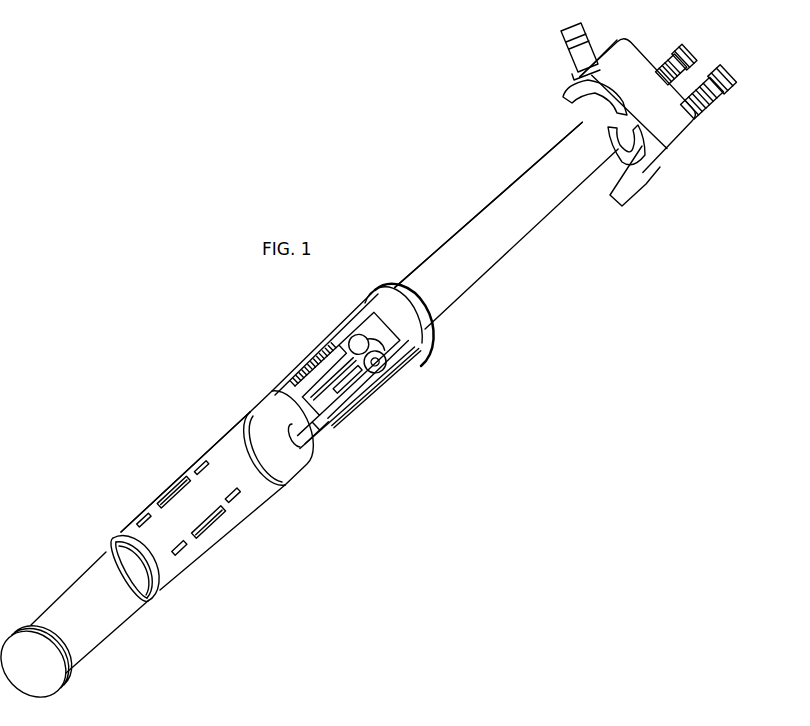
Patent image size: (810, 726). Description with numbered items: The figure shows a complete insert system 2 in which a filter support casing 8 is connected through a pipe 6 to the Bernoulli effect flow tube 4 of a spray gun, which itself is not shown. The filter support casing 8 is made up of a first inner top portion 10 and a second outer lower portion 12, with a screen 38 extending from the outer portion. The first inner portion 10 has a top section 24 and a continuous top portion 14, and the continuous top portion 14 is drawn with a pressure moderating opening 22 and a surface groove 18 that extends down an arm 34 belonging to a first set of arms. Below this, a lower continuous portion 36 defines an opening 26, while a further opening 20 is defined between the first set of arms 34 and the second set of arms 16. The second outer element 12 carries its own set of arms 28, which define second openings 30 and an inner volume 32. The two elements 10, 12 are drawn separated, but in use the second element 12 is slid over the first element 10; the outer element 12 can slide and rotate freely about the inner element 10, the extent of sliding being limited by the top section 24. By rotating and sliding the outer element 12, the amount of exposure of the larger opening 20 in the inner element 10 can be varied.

The insert system 2 is at (468, 312).
The Bernoulli effect flow tube 4 is at (692, 142).
The pipe 6 is at (553, 212).
The filter support casing 8 is at (187, 412).
The first inner top portion 10 is at (403, 372).
The second outer lower portion 12 is at (272, 507).
The continuous top portion 14 is at (407, 357).
The second set of arms 16 is at (326, 412).
The surface groove 18 is at (358, 418).
The opening 20 is at (333, 432).
The pressure moderating opening 22 is at (410, 333).
The top section 24 is at (440, 333).
The opening 26 is at (289, 445).
The set of arms 28 is at (236, 536).
The second openings 30 is at (205, 533).
The inner volume 32 is at (160, 578).
The arm 34 is at (350, 397).
The lower continuous portion 36 is at (313, 450).
The screen 38 is at (105, 635).